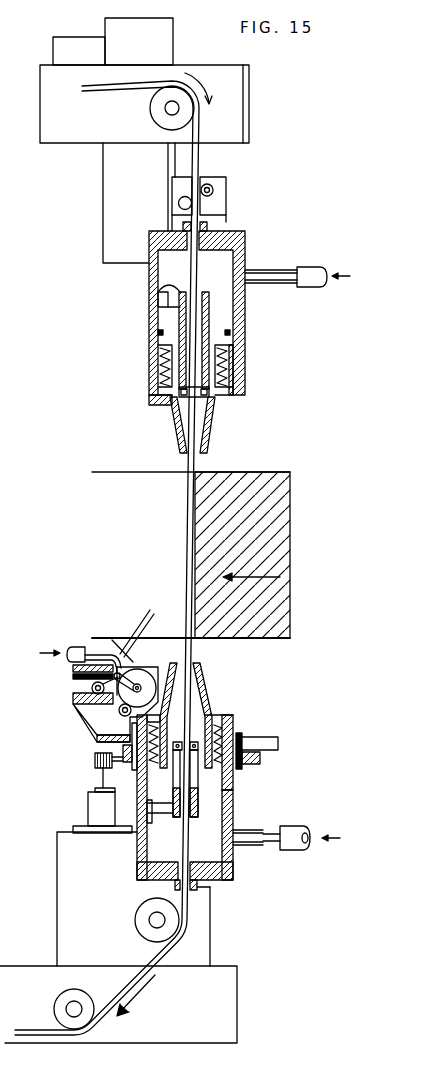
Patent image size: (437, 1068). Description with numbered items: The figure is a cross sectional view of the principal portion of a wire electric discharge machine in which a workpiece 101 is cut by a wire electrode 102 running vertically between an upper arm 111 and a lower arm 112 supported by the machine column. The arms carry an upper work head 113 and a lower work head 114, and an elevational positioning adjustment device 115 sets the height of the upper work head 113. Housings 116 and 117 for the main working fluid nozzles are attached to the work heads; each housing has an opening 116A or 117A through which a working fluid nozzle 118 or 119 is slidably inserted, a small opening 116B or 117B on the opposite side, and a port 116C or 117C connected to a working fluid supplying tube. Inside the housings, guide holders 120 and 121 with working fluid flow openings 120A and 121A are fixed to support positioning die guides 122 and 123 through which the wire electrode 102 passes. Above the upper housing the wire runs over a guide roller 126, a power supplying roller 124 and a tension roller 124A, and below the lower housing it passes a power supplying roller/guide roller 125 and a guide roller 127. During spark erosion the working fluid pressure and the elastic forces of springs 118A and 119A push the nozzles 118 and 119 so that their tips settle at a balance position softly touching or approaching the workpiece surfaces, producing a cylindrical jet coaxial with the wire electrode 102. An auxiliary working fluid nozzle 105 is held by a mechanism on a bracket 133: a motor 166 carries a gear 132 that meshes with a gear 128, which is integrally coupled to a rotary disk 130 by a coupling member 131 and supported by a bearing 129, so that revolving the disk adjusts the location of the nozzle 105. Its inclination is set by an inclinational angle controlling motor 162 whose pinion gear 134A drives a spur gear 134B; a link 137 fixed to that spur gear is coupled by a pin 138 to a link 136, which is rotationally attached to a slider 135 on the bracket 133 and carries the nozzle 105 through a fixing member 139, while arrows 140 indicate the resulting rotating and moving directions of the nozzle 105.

The workpiece 101 is at (275, 472).
The wire electrode 102 is at (188, 535).
The working fluid nozzle 105 is at (125, 643).
The upper arm 111 is at (245, 95).
The lower arm 112 is at (230, 1012).
The upper work head 113 is at (170, 35).
The lower work head 114 is at (57, 935).
The elevational positioning adjustment device 115 is at (60, 37).
The housing 116 is at (150, 342).
The opening 116A is at (160, 396).
The small opening 116B is at (205, 228).
The port 116C is at (258, 282).
The housing 117 is at (233, 865).
The opening 117A is at (228, 718).
The small opening 117B is at (200, 888).
The port 117C is at (268, 830).
The working fluid nozzle 118 is at (208, 445).
The spring 118A is at (228, 374).
The working fluid nozzle 119 is at (200, 680).
The spring 119A is at (240, 738).
The guide holder 120 is at (160, 296).
The working fluid flow opening 120A is at (210, 335).
The guide holder 121 is at (200, 810).
The working fluid flow opening 121A is at (205, 792).
The positioning die guide 122 is at (200, 402).
The positioning die guide 123 is at (193, 740).
The power supplying roller 124 is at (178, 206).
The tension roller 124A is at (215, 190).
The power supplying roller/guide roller 125 is at (145, 915).
The guide roller 126 is at (150, 117).
The guide roller 127 is at (58, 1008).
The gear 128 is at (244, 765).
The bearing 129 is at (278, 742).
The rotary disk 130 is at (110, 762).
The coupling member 131 is at (262, 758).
The gear 132 is at (108, 772).
The bracket 133 is at (80, 715).
The pinion gear 134A is at (108, 722).
The spur gear 134B is at (168, 635).
The slider 135 is at (75, 698).
The link 136 is at (70, 656).
The link 137 is at (137, 680).
The pin 138 is at (92, 688).
The fixing member 139 is at (92, 650).
The arrows 140 is at (143, 617).
The inclinational angle controlling motor 162 is at (96, 758).
The motor 166 is at (88, 812).